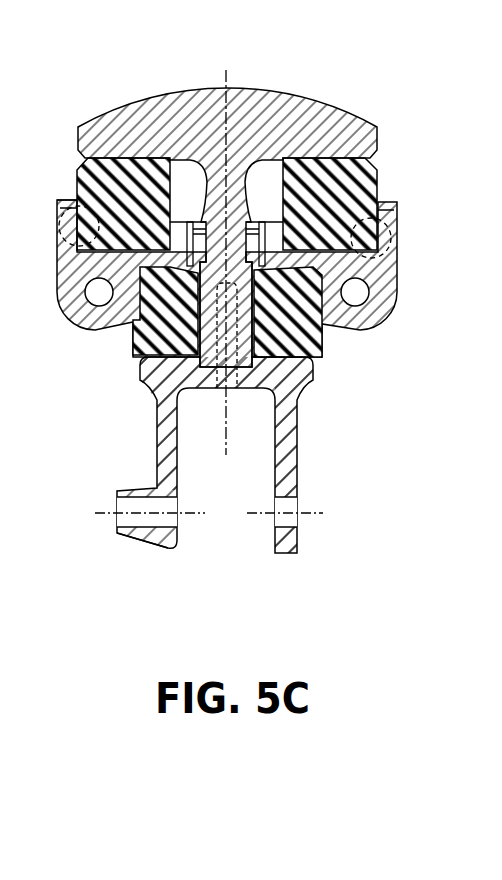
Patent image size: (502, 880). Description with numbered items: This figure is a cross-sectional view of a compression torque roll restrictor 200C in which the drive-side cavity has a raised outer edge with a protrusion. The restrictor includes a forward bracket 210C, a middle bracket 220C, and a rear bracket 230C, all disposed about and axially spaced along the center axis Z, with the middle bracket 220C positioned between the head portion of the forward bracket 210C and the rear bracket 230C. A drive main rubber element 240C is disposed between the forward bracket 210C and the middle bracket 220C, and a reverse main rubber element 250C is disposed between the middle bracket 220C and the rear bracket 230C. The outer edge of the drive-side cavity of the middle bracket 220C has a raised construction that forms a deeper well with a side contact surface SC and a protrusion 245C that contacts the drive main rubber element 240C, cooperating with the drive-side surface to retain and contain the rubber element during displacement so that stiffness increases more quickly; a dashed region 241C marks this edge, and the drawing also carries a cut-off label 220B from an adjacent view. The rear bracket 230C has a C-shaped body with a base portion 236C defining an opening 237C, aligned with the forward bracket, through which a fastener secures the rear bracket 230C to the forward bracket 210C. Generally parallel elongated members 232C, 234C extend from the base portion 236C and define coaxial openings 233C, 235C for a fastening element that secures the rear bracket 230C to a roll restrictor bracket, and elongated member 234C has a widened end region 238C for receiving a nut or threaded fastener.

The compression torque roll restrictor 200C is at (250, 326).
The forward bracket 210C is at (267, 127).
The middle bracket 220C is at (412, 302).
The housing (alternate embodiment) 220B is at (0, 280).
The drive main rubber element 240C is at (358, 180).
The protrusion 245C is at (382, 200).
The housing lip region 241C is at (382, 222).
The reverse main rubber element 250C is at (298, 337).
The rear bracket 230C is at (233, 464).
The base portion 236C is at (310, 380).
The elongated member 234C is at (168, 462).
The opening 235C is at (88, 498).
The opening 237C is at (215, 374).
The elongated member 232C is at (286, 452).
The opening 233C is at (314, 522).
The widened end region 238C is at (150, 562).
The side contact surface SC is at (163, 229).
The center axis Z is at (226, 442).